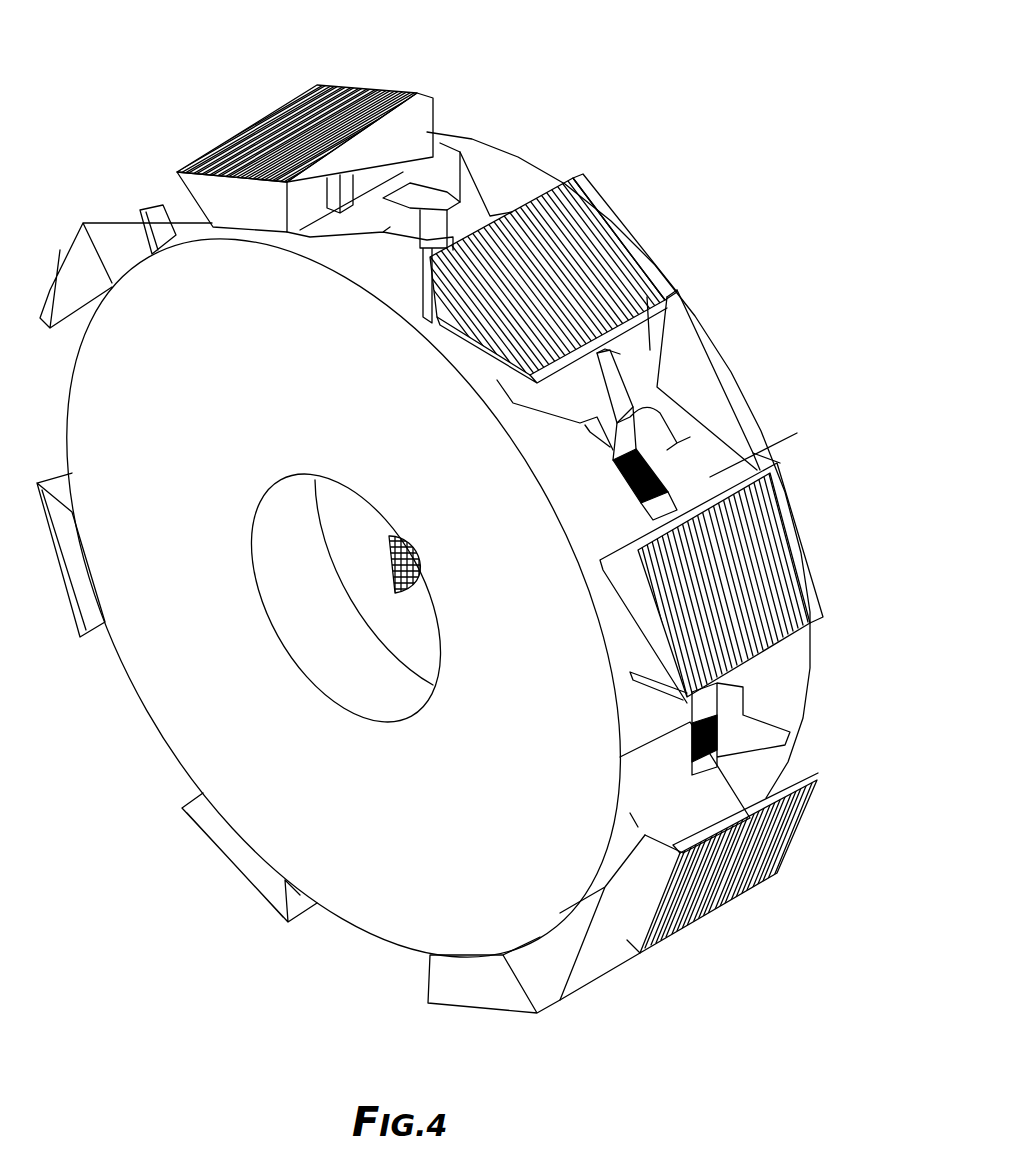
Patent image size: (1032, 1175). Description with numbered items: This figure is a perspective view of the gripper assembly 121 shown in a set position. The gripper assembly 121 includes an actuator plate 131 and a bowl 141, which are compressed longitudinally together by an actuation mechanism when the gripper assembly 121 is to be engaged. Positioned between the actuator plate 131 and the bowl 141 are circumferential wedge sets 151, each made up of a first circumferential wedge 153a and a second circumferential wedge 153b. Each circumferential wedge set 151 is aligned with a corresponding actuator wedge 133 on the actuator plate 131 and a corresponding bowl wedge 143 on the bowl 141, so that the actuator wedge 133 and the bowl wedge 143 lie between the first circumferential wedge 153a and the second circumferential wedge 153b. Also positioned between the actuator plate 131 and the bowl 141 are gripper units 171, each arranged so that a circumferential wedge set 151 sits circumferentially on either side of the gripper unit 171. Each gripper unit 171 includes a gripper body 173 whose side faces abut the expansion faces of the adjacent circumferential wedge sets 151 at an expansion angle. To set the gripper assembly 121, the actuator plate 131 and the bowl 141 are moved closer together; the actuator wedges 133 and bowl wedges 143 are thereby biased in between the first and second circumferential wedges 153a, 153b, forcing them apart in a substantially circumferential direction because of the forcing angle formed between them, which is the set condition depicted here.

The gripper assembly 121 is at (125, 70).
The actuator plate 131 is at (205, 705).
The actuator wedge 133 is at (580, 458).
The bowl 141 is at (790, 690).
The bowl wedge 143 is at (704, 403).
The circumferential wedge set 151 is at (676, 383).
The first circumferential wedge 153a is at (650, 345).
The second circumferential wedge 153b is at (722, 468).
The gripper unit 171 is at (395, 85).
The gripper body 173 is at (228, 197).